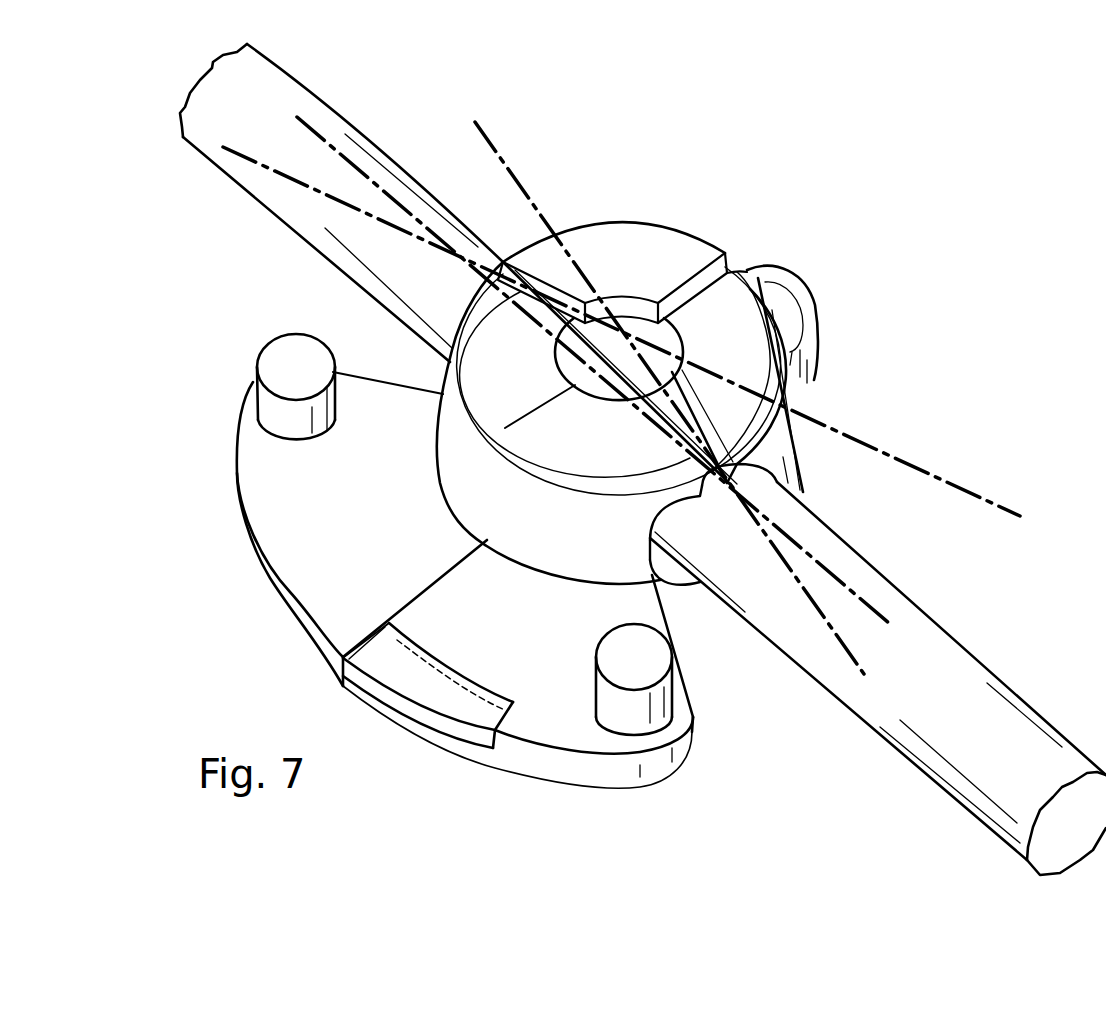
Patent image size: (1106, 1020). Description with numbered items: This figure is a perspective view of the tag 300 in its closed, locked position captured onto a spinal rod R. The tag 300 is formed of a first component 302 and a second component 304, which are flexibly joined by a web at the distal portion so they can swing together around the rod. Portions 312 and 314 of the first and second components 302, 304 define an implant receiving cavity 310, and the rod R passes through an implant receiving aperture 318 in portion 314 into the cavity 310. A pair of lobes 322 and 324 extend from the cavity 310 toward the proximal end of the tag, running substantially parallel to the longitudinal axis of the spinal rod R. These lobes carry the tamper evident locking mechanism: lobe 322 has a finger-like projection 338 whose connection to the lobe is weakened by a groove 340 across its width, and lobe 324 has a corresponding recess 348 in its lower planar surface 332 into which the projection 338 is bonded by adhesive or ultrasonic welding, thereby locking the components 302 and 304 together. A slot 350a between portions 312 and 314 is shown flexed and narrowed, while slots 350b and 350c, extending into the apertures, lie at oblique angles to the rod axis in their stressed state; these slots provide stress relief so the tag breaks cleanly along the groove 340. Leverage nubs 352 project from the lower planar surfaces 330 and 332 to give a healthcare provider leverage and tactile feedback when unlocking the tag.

The tag 300 is at (782, 150).
The first component 302 is at (592, 222).
The second component 304 is at (812, 489).
The implant receiving cavity 310 is at (607, 370).
The portion of first component 312 is at (657, 223).
The portion of second component 314 is at (797, 405).
The implant receiving aperture 318 is at (687, 597).
The lobe 322 is at (256, 579).
The lobe 324 is at (583, 790).
The lower planar surface 330 is at (378, 383).
The lower planar surface 332 is at (452, 572).
The finger-like projection 338 is at (415, 682).
The groove 340 is at (364, 643).
The recess 348 is at (480, 718).
The slot 350a is at (727, 270).
The slot 350b is at (590, 303).
The slot 350c is at (710, 488).
The leverage nubs 352 is at (284, 338).
The spinal rod R is at (643, 459).